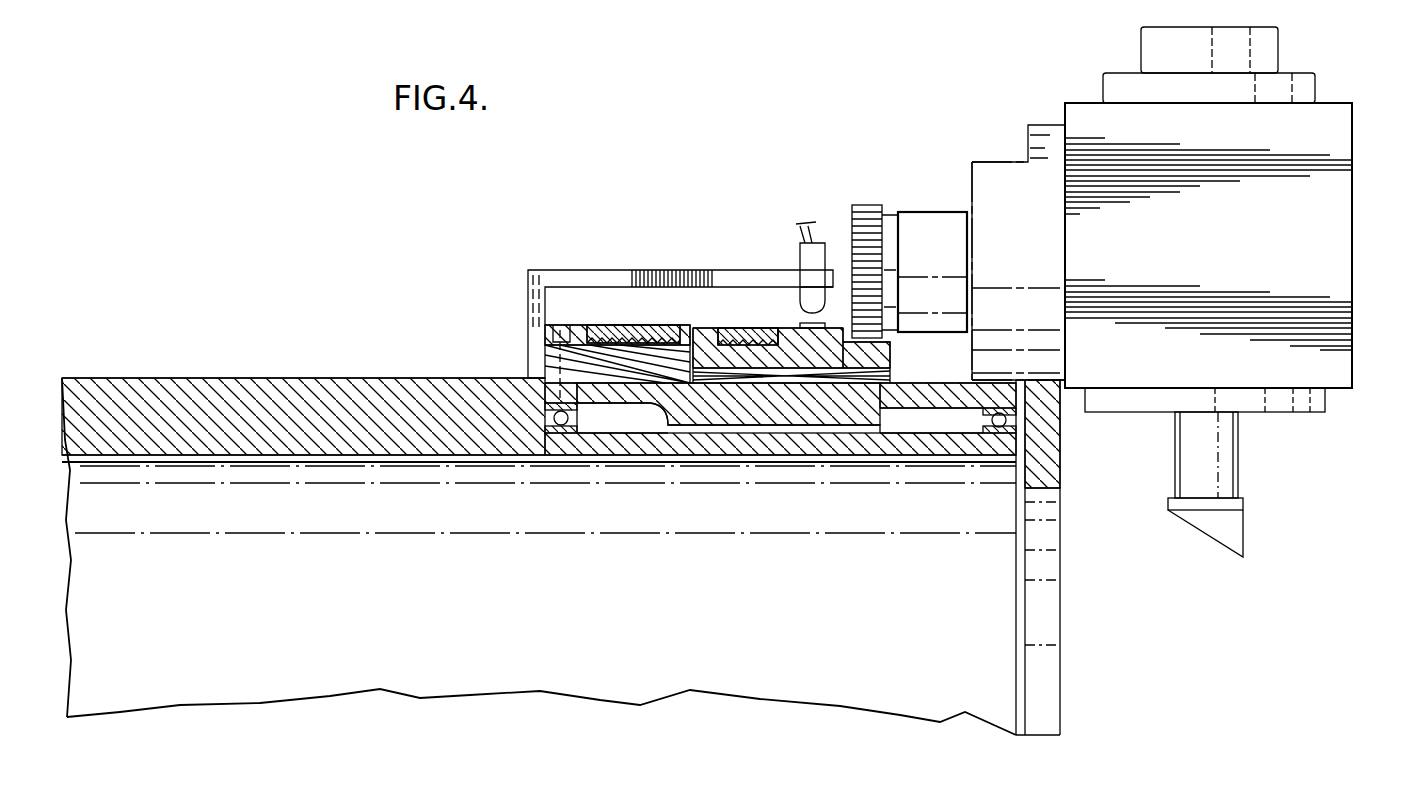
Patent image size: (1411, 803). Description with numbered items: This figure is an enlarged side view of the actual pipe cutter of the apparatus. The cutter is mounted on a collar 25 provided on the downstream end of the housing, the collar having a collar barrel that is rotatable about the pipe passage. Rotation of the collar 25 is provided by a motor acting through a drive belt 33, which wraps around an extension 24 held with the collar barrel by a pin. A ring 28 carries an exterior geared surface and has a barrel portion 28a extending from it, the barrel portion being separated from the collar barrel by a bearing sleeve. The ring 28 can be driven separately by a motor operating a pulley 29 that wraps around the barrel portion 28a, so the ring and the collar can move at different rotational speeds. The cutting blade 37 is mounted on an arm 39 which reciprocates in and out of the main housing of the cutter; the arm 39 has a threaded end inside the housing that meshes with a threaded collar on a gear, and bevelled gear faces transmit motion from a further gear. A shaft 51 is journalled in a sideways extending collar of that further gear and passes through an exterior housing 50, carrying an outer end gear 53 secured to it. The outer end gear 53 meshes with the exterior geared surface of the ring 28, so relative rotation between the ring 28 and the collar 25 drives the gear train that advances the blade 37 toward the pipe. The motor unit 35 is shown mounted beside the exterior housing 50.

The extension 24 is at (622, 367).
The collar 25 is at (1043, 600).
The ring 28 is at (878, 345).
The barrel portion 28a is at (803, 352).
The pulley 29 is at (745, 328).
The drive belt 33 is at (628, 325).
The motor 35 is at (1335, 96).
The blade 37 is at (1235, 533).
The arm 39 is at (1220, 458).
The exterior housing 50 is at (948, 215).
The shaft 51 is at (888, 212).
The outer end gear 53 is at (870, 205).